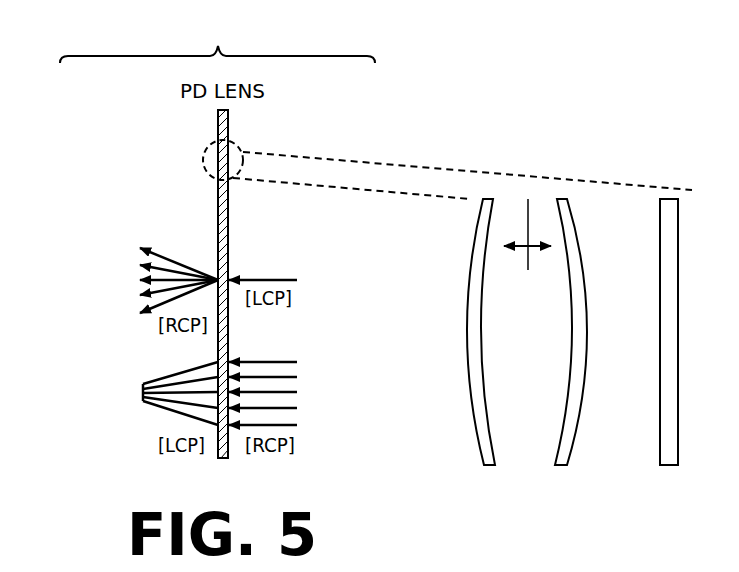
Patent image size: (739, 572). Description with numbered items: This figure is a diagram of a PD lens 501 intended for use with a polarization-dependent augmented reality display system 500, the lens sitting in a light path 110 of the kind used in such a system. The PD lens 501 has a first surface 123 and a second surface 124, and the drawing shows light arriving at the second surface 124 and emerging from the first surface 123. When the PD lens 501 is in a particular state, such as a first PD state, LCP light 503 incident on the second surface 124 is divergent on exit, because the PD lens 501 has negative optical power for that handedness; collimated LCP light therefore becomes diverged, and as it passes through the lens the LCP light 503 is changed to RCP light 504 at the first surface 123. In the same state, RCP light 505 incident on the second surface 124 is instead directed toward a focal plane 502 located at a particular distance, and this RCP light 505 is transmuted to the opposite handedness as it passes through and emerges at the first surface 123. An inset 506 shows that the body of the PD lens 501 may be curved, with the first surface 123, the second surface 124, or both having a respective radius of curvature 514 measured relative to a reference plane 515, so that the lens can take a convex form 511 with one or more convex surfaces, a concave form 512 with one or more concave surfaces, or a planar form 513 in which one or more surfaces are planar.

The light path 110 is at (217, 41).
The polarization-dependent augmented reality display system 500 is at (104, 150).
The PD lens 501 is at (217, 136).
The inset 506 is at (238, 152).
The first surface 123 is at (212, 232).
The second surface 124 is at (233, 232).
The RCP light 504 is at (155, 253).
The focal plane 502 is at (143, 394).
The LCP light 503 is at (291, 279).
The RCP light 505 is at (294, 361).
The convex form 511 is at (476, 390).
The concave form 512 is at (568, 427).
The planar form 513 is at (663, 262).
The radius of curvature 514 is at (517, 248).
The reference plane 515 is at (531, 256).